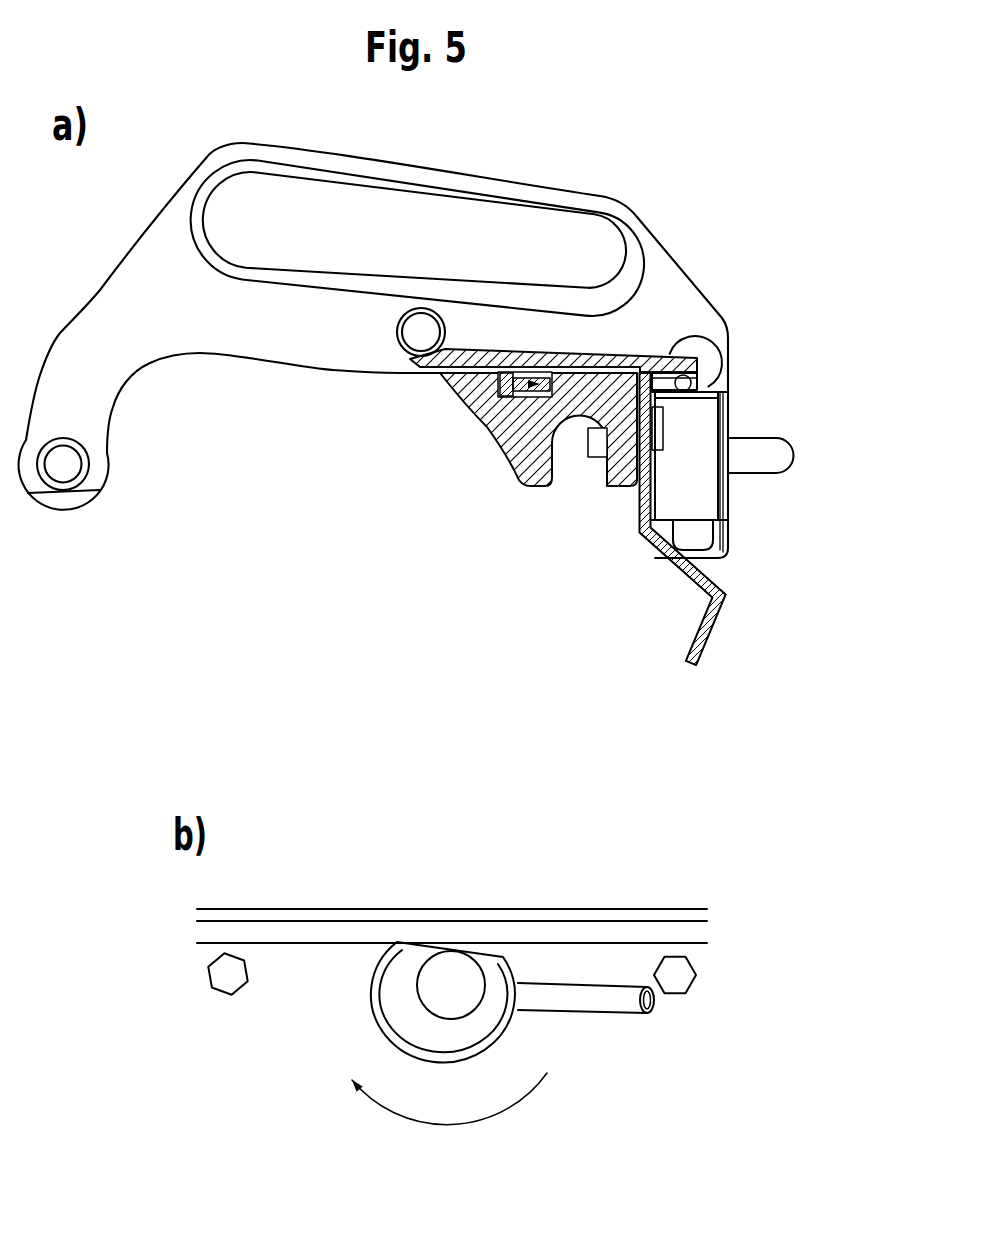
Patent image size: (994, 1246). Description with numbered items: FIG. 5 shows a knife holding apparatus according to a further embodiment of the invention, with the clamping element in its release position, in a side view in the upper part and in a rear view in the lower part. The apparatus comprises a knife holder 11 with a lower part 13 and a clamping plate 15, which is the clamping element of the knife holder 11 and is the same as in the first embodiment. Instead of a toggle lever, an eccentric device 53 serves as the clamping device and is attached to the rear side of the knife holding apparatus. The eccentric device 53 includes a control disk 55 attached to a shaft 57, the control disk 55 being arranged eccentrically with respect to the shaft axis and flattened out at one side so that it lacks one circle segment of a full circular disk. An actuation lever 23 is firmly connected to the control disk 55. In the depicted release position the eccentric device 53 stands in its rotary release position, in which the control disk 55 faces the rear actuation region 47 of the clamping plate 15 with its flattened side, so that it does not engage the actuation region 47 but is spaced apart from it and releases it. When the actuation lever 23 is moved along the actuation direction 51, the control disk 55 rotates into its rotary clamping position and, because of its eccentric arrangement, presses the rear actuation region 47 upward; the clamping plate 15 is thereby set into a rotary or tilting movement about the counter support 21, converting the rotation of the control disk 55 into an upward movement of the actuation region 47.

The knife holder 11 is at (484, 482).
The lower part 13 is at (532, 476).
The clamping plate 15 is at (474, 355).
The counter support 21 is at (510, 427).
The actuation lever 23 is at (777, 458).
The actuation region 47 is at (654, 348).
The actuation direction 51 is at (547, 1075).
The eccentric device 53 is at (742, 500).
The control disk 55 is at (705, 413).
The shaft 57 is at (453, 963).